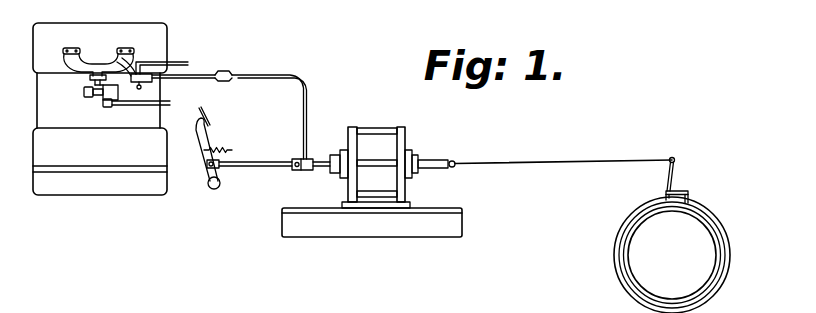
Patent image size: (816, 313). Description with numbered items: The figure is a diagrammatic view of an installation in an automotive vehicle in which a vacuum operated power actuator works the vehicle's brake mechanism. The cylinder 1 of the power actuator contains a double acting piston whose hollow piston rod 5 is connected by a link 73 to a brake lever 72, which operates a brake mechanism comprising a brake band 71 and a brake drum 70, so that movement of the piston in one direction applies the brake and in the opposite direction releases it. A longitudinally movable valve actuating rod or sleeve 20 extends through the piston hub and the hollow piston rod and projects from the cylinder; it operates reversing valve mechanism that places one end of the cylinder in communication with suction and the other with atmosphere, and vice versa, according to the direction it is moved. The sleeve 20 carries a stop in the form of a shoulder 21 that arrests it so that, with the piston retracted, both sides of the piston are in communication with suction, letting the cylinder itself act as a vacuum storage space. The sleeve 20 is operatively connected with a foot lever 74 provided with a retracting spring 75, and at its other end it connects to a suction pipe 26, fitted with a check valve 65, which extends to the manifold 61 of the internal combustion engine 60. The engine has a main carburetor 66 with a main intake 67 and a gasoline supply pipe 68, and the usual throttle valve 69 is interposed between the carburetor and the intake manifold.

The cylinder of a power actuator 1 is at (374, 148).
The hollow piston rod 5 is at (428, 162).
The valve actuating rod or sleeve 20 is at (315, 158).
The shoulder 21 is at (303, 170).
The suction pipe 26 is at (310, 119).
The internal combustion engine 60 is at (165, 48).
The manifold 61 is at (92, 60).
The check valve 65 is at (232, 74).
The main carburetor 66 is at (104, 95).
The main intake 67 is at (84, 91).
The gasoline supply pipe 68 is at (137, 104).
The throttle valve 69 is at (100, 74).
The brake drum 70 is at (629, 254).
The brake band 71 is at (731, 277).
The brake lever 72 is at (677, 178).
The link 73 is at (570, 157).
The foot lever 74 is at (205, 123).
The retracting spring 75 is at (228, 147).